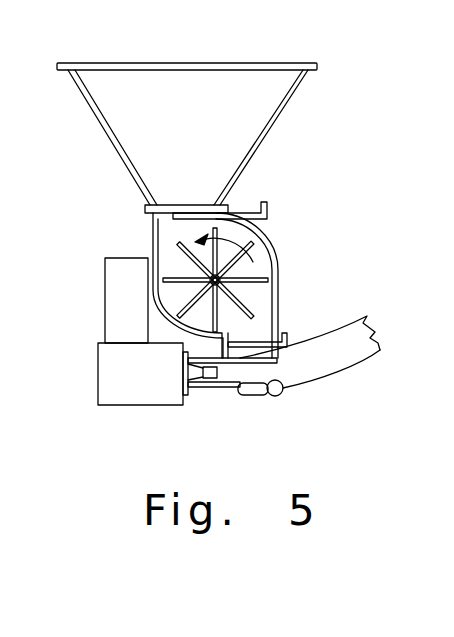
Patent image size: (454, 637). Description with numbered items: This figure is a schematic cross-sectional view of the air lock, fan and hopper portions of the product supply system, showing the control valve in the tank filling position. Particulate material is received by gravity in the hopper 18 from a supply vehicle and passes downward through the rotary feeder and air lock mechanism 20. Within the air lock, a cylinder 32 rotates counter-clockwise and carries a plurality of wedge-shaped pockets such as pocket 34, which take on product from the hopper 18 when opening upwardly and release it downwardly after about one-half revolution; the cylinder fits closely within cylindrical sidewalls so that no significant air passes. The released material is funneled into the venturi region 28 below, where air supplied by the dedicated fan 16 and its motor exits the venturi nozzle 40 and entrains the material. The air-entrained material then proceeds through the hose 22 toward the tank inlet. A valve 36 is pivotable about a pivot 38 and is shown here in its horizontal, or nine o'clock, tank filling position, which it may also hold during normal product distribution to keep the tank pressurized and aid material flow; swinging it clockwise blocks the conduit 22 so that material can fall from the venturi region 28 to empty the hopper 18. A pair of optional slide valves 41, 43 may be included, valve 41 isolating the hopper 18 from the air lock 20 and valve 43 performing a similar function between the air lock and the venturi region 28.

The fan 16 is at (118, 323).
The hopper 18 is at (106, 132).
The rotary feeder and air lock mechanism 20 is at (272, 250).
The hose 22 is at (325, 378).
The venturi region 28 is at (238, 372).
The cylinder 32 is at (253, 306).
The wedge-shaped pocket 34 is at (182, 265).
The valve 36 is at (250, 395).
The pivot 38 is at (283, 396).
The venturi nozzle 40 is at (210, 374).
The slide valve 41 is at (268, 210).
The slide valve 43 is at (288, 337).